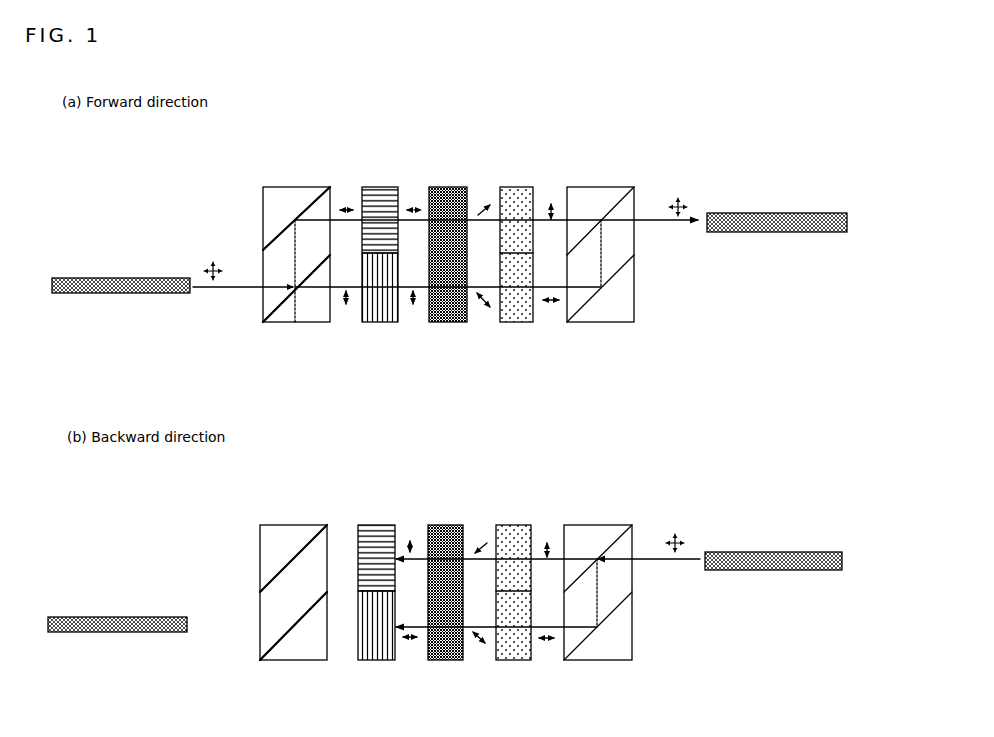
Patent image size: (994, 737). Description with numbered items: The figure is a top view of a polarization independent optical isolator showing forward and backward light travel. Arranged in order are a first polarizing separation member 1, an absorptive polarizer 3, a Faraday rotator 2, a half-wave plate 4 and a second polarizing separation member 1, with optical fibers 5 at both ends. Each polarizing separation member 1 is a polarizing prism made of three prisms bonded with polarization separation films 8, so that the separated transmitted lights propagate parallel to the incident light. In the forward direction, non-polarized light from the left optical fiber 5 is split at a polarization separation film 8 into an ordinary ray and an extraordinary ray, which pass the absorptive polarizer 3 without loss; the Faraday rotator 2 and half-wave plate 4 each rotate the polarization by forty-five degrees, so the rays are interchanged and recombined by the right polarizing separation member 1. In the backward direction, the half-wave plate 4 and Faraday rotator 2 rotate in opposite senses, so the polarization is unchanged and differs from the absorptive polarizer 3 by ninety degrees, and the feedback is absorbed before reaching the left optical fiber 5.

The polarizing separation member 1 is at (278, 185).
The Faraday rotator 2 is at (438, 187).
The absorptive polarizer 3 is at (372, 185).
The half-wave plate 4 is at (507, 187).
The optical fiber 5 is at (87, 278).
The polarization separation film 8 is at (280, 237).